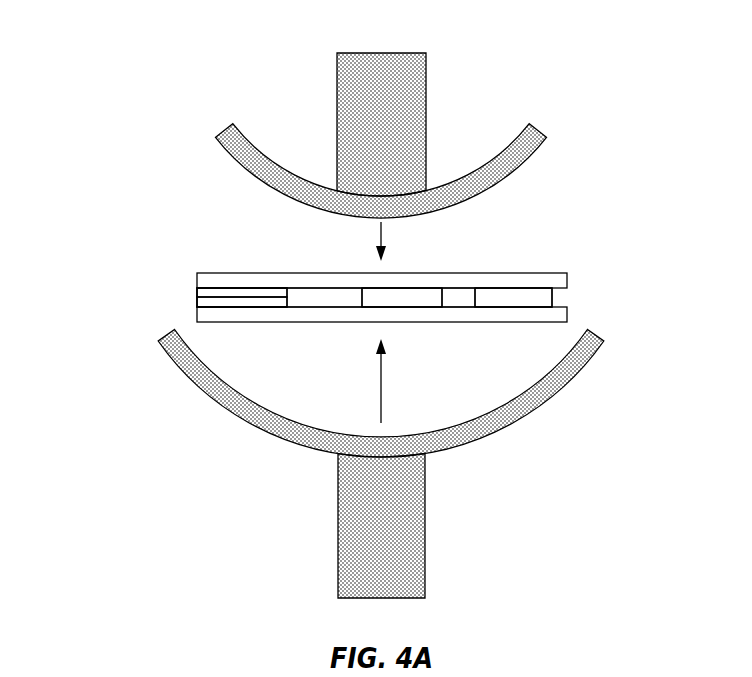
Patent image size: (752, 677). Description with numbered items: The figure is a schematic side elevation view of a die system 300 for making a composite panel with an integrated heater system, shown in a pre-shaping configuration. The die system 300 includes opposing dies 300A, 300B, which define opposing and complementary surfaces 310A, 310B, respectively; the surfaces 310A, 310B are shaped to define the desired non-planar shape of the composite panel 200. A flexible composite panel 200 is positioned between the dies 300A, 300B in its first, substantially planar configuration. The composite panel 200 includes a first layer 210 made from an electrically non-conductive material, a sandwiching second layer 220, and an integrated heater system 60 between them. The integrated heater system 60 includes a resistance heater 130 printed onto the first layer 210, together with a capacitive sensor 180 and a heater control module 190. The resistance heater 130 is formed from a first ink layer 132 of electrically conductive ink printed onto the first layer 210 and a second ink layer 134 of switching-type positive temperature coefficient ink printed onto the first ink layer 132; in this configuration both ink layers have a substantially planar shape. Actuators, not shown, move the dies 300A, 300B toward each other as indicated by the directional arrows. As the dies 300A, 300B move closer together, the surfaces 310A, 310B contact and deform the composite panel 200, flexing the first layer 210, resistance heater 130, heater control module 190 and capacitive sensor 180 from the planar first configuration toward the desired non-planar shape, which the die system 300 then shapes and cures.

The die system 300 is at (243, 60).
The die 300A is at (437, 113).
The die 300B is at (437, 560).
The surface 310A is at (508, 175).
The surface 310B is at (518, 398).
The composite panel 200 is at (185, 254).
The second layer 220 is at (558, 279).
The first layer 210 is at (563, 315).
The integrated heater system 60 is at (580, 296).
The resistance heater 130 is at (270, 277).
The second ink layer 134 is at (198, 292).
The first ink layer 132 is at (198, 302).
The capacitive sensor 180 is at (422, 298).
The heater control module 190 is at (493, 302).